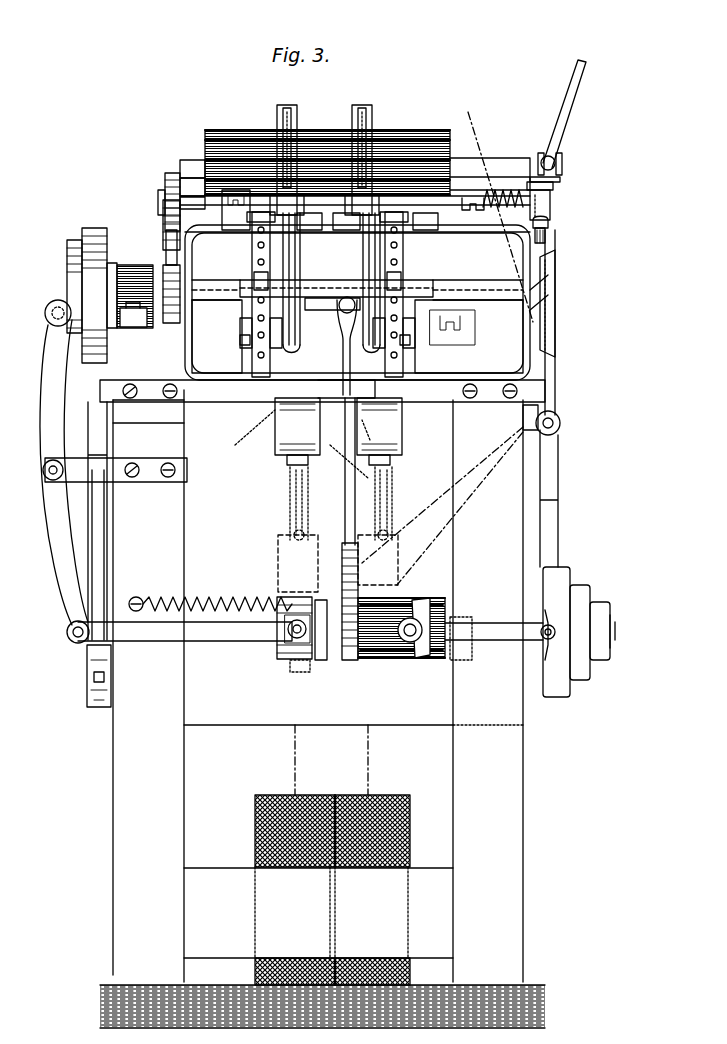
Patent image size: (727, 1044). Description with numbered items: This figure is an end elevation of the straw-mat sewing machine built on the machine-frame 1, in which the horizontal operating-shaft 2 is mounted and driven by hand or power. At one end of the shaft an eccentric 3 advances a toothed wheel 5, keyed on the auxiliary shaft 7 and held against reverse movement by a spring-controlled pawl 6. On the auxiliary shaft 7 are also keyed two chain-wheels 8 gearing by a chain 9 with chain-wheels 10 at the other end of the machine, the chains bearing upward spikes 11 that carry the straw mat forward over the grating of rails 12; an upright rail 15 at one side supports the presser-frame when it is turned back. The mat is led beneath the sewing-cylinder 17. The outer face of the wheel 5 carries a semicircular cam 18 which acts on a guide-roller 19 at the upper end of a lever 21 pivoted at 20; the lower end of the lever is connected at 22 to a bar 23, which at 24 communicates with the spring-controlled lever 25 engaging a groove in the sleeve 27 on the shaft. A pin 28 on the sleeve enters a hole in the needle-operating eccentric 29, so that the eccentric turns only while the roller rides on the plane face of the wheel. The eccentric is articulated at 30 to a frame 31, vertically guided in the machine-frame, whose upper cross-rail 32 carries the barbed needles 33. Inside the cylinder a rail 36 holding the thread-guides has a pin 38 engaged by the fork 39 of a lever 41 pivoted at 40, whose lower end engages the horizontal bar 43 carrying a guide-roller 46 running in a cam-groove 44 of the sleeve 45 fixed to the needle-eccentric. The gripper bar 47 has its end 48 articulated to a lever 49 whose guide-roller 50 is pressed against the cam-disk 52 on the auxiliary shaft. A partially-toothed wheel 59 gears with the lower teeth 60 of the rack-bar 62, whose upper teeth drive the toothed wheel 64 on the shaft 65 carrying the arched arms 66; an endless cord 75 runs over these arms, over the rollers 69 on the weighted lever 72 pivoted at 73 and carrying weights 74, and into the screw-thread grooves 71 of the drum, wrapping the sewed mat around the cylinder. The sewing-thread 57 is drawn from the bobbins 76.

The machine-frame 1 is at (175, 495).
The operating-shaft 2 is at (245, 648).
The eccentric 3 is at (93, 674).
The toothed wheel 5 is at (92, 236).
The spring-controlled pawl 6 is at (95, 370).
The auxiliary shaft 7 is at (200, 262).
The chain-wheels 8 is at (252, 270).
The chain 9 is at (275, 252).
The chain-wheels 10 is at (350, 345).
The spikes 11 is at (390, 213).
The rails 12 is at (222, 222).
The upright rail 15 is at (572, 80).
The sewing-cylinder 17 is at (233, 150).
The cam 18 is at (72, 280).
The guide-roller 19 is at (45, 318).
The pivot 20 is at (45, 475).
The lever 21 is at (62, 555).
The connection 22 is at (68, 641).
The bar 23 is at (160, 642).
The connection 24 is at (292, 640).
The spring-controlled lever 25 is at (318, 662).
The sleeve 27 is at (320, 600).
The pin 28 is at (345, 560).
The needle-operating eccentric 29 is at (375, 565).
The articulation 30 is at (340, 312).
The frame 31 is at (190, 343).
The upper cross-rail 32 is at (238, 292).
The barbed needles 33 is at (305, 135).
The rail 36 is at (200, 160).
The pin 38 is at (547, 155).
The fork 39 is at (560, 180).
The pivot 40 is at (560, 418).
The lever 41 is at (556, 517).
The bar 43 is at (452, 645).
The cam-groove 44 is at (425, 610).
The sleeve 45 is at (385, 608).
The guide-roller 46 is at (408, 642).
The bar 47 is at (190, 178).
The end 48 is at (553, 187).
The lever 49 is at (550, 207).
The guide-roller 50 is at (548, 240).
The cam-disk 52 is at (558, 318).
The sewing-thread 57 is at (366, 757).
The partially-toothed wheel 59 is at (168, 275).
The lower series of teeth 60 is at (165, 230).
The rack-bar 62 is at (175, 240).
The toothed wheel 64 is at (166, 182).
The shaft 65 is at (188, 200).
The arched arms 66 is at (292, 108).
The roller 69 is at (290, 505).
The grooves 71 is at (262, 405).
The lever 72 is at (344, 448).
The pivot 73 is at (285, 445).
The weights 74 is at (287, 462).
The endless cord 75 is at (284, 120).
The bobbins 76 is at (270, 795).